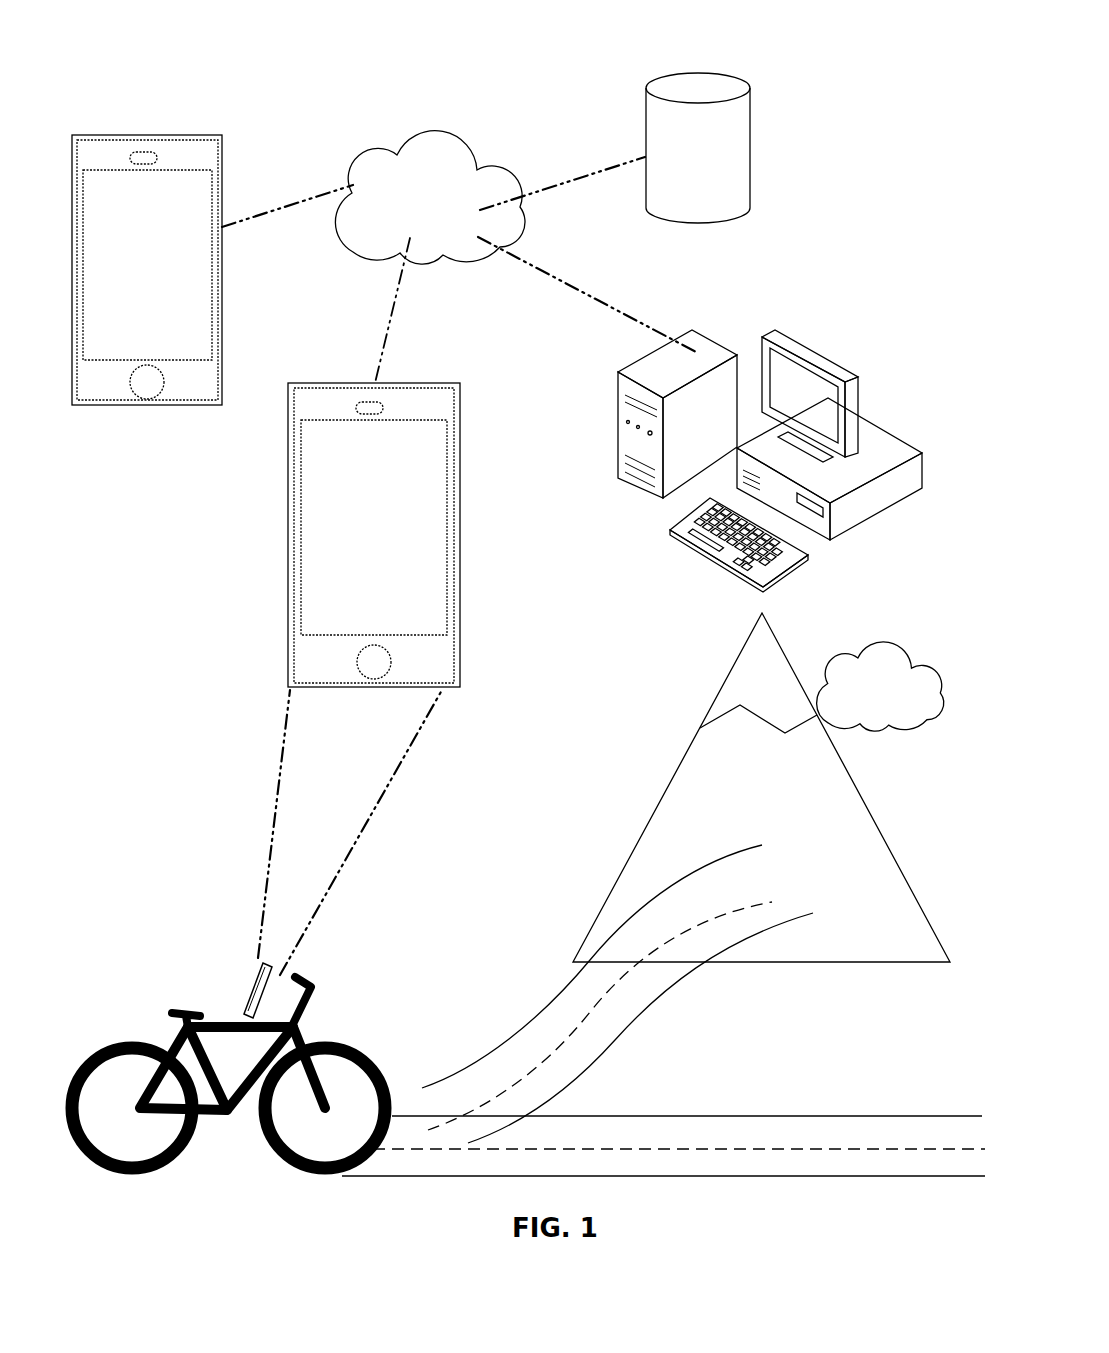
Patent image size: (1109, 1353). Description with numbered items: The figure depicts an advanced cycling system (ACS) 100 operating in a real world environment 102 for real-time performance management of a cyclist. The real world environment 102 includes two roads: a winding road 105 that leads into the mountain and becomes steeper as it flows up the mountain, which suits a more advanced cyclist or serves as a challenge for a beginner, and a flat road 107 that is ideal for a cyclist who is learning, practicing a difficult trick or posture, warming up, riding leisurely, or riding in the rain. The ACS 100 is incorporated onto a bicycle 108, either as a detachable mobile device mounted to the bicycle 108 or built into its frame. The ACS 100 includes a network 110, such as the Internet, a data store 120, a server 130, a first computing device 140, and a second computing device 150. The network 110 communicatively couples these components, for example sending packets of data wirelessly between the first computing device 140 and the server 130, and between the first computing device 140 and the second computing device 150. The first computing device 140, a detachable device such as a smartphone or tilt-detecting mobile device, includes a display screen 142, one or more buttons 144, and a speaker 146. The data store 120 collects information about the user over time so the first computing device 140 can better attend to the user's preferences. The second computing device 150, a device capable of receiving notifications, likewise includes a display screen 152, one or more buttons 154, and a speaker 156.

The advanced cycling system 100 is at (858, 48).
The real world environment 102 is at (804, 1044).
The winding road 105 is at (518, 1023).
The flat road 107 is at (863, 1108).
The bicycle 108 is at (335, 1011).
The network 110 is at (406, 207).
The data store 120 is at (678, 172).
The server 130 is at (782, 305).
The first computing device 140 is at (348, 700).
The display screen 142 is at (433, 592).
The buttons 144 is at (372, 662).
The speaker 146 is at (358, 408).
The second computing device 150 is at (191, 267).
The display screen 152 is at (194, 332).
The buttons 154 is at (147, 383).
The speaker 156 is at (157, 158).